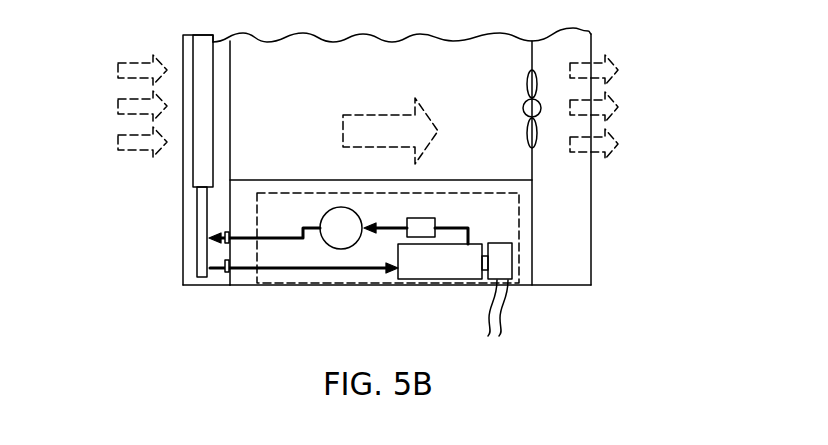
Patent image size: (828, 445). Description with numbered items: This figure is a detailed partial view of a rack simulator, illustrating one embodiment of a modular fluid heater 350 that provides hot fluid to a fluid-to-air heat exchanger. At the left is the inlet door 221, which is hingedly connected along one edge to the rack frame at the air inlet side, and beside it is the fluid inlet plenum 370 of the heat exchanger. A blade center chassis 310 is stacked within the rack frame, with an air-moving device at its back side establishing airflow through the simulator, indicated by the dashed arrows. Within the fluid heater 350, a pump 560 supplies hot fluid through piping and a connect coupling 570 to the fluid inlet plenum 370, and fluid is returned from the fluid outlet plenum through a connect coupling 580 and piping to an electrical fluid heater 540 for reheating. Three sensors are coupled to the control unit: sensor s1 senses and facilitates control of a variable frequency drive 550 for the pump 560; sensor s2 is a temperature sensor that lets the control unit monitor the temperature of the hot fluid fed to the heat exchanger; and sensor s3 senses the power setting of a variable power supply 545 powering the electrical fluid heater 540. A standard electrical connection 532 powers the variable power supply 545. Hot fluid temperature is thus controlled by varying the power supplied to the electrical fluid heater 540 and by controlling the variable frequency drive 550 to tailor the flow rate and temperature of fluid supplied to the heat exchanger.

The blade center chassis 310 is at (398, 79).
The inlet door 221 is at (183, 212).
The fluid inlet plenum 370 is at (200, 157).
The fluid heater 350 is at (328, 284).
The pump 560 is at (337, 207).
The connect coupling 570 is at (225, 243).
The connect coupling 580 is at (228, 285).
The variable frequency drive 550 is at (437, 190).
The electrical fluid heater 540 is at (432, 273).
The variable power supply 545 is at (568, 272).
The standard electrical connection 532 is at (500, 313).
The sensor s1 is at (409, 208).
The temperature sensor s2 is at (458, 225).
The sensor s3 is at (498, 235).